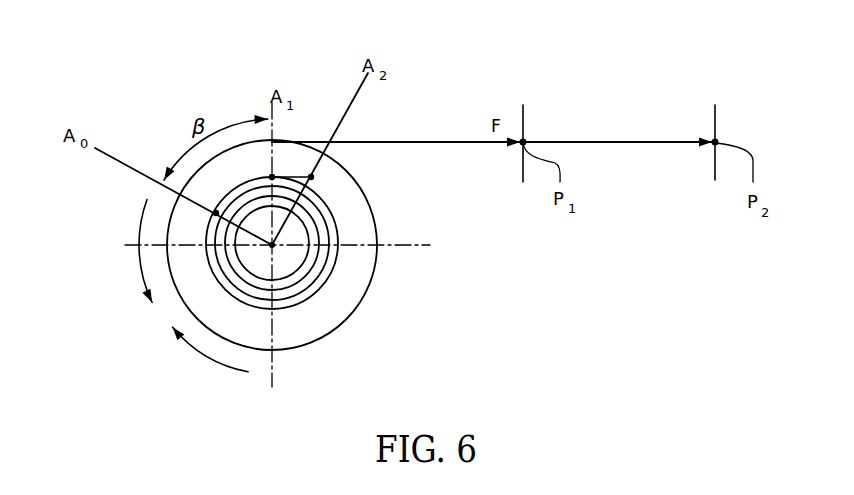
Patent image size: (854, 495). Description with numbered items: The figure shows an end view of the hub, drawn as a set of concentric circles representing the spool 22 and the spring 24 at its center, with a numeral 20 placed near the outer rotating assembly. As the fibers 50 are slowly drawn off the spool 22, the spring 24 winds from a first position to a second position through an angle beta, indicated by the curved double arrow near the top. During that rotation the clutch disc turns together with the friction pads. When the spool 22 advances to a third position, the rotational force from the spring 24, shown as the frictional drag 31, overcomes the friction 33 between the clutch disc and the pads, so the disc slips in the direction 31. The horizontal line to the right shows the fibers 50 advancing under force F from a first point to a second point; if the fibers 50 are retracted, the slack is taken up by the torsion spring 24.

The rotor assembly 20 is at (157, 129).
The spool 22 is at (318, 308).
The spring 24 is at (335, 270).
The frictional drag 31 is at (140, 260).
The friction 33 is at (205, 358).
The fibers 50 is at (615, 143).